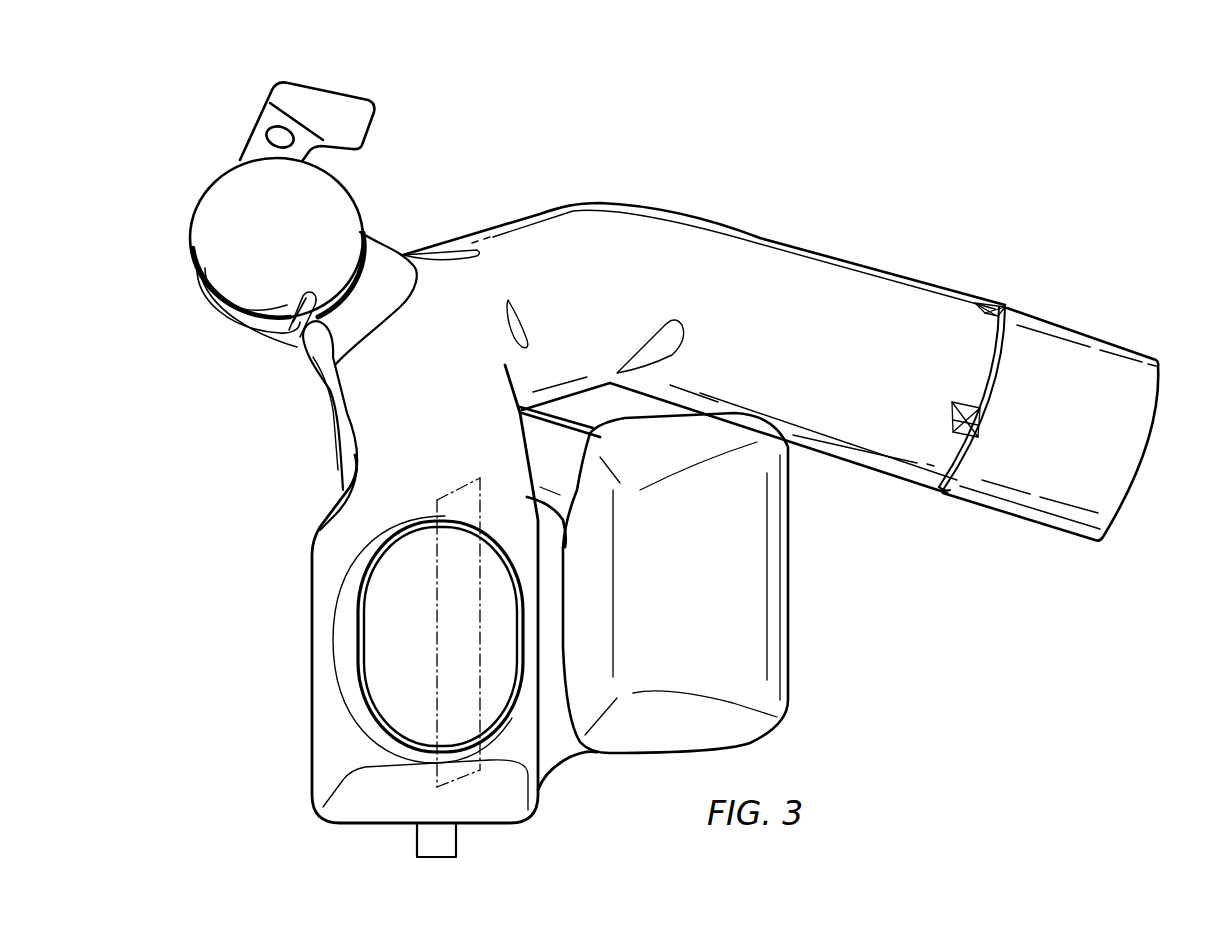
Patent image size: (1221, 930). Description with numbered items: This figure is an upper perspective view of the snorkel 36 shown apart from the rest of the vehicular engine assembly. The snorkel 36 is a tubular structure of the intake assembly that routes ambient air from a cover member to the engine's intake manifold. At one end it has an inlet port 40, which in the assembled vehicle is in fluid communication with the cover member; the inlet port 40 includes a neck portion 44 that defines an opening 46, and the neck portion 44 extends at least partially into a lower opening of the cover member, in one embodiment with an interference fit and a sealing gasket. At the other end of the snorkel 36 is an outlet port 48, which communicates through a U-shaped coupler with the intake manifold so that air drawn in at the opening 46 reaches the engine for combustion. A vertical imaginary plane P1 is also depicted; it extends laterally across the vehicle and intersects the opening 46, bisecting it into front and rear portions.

The snorkel 36 is at (838, 228).
The outlet port 48 is at (1158, 454).
The inlet port 40 is at (413, 510).
The neck portion 44 is at (362, 574).
The opening 46 is at (388, 648).
The vertical imaginary plane P1 is at (455, 595).